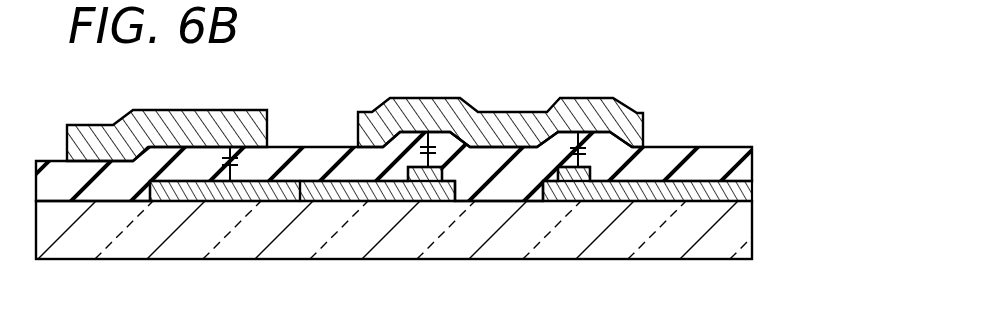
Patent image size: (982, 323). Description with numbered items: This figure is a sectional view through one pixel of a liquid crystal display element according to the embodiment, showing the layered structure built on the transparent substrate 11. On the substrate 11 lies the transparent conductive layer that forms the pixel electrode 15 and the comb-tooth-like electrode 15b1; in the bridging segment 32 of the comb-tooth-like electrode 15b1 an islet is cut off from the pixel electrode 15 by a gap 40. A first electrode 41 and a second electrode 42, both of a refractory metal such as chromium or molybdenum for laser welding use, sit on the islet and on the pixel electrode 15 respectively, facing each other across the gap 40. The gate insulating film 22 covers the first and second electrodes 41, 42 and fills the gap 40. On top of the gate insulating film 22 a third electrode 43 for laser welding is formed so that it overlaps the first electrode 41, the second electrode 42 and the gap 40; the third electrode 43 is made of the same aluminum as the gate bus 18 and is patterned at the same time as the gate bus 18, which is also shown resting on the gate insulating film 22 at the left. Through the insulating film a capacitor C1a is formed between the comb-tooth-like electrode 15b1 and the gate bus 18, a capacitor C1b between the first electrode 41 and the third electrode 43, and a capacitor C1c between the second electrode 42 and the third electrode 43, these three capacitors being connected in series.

The transparent substrate 11 is at (752, 242).
The pixel electrode 15 is at (757, 190).
The comb-tooth-like electrode 15b1 is at (219, 200).
The gate bus 18 is at (130, 110).
The gate insulating film 22 is at (756, 162).
The bridging segment 32 is at (360, 195).
The gap 40 is at (502, 195).
The first electrode 41 is at (413, 181).
The second electrode 42 is at (582, 181).
The third electrode 43 is at (436, 112).
The capacitor C1a is at (240, 162).
The capacitor C1b is at (418, 153).
The capacitor C1c is at (593, 149).